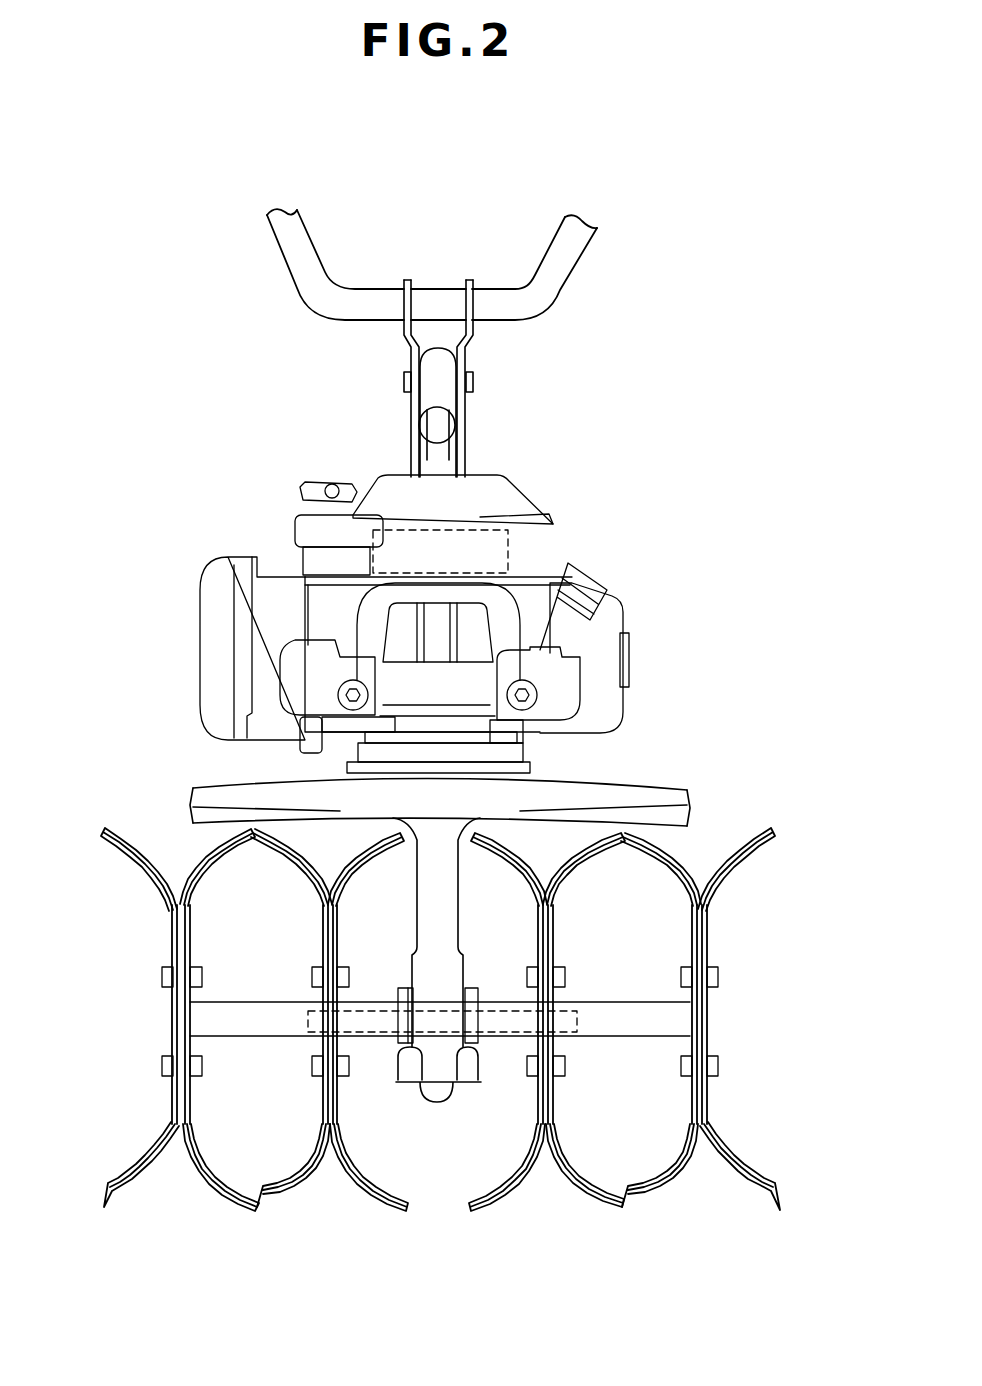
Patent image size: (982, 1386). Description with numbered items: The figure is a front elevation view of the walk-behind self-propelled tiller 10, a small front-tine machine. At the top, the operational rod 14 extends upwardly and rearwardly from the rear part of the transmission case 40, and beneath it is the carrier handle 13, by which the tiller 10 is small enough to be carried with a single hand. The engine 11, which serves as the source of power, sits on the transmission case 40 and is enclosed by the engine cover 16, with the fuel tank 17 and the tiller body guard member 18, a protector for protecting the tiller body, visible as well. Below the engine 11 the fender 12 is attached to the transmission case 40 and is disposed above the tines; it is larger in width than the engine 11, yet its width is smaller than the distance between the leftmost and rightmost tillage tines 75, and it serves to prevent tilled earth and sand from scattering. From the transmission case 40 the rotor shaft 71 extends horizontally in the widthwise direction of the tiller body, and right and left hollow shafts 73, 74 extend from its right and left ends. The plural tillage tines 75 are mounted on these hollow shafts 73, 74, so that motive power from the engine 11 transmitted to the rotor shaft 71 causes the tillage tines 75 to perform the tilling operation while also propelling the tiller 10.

The walk-behind self-propelled tiller 10 is at (218, 157).
The engine 11 is at (470, 527).
The fender 12 is at (640, 776).
The carrier handle 13 is at (438, 403).
The operational rod 14 is at (493, 285).
The engine cover 16 is at (540, 517).
The fuel tank 17 is at (300, 560).
The tiller body guard member 18 is at (430, 595).
The transmission case 40 is at (437, 1060).
The rotor shaft 71 is at (578, 1027).
The hollow shaft 73 is at (368, 1038).
The hollow shaft 74 is at (253, 1025).
The tillage tines 75 is at (680, 863).